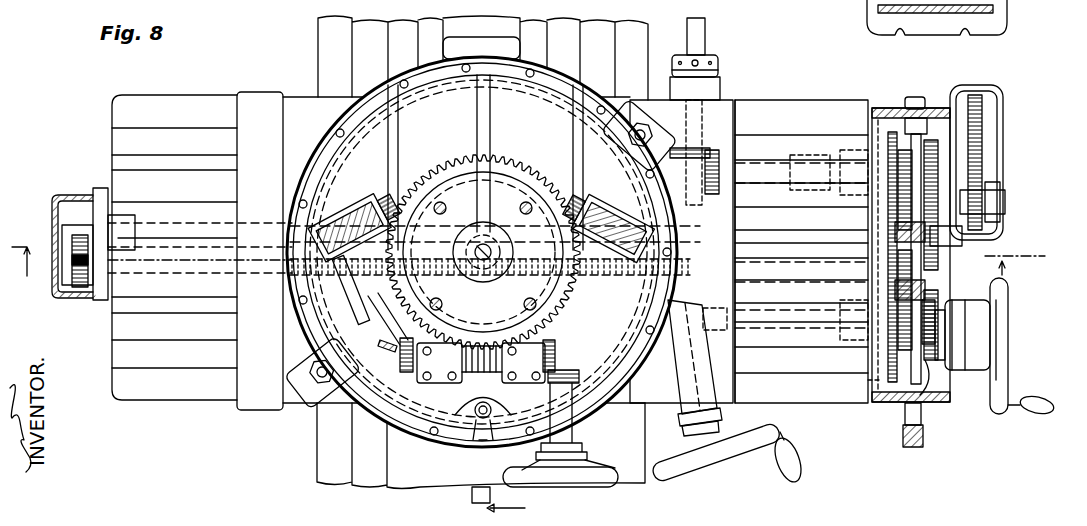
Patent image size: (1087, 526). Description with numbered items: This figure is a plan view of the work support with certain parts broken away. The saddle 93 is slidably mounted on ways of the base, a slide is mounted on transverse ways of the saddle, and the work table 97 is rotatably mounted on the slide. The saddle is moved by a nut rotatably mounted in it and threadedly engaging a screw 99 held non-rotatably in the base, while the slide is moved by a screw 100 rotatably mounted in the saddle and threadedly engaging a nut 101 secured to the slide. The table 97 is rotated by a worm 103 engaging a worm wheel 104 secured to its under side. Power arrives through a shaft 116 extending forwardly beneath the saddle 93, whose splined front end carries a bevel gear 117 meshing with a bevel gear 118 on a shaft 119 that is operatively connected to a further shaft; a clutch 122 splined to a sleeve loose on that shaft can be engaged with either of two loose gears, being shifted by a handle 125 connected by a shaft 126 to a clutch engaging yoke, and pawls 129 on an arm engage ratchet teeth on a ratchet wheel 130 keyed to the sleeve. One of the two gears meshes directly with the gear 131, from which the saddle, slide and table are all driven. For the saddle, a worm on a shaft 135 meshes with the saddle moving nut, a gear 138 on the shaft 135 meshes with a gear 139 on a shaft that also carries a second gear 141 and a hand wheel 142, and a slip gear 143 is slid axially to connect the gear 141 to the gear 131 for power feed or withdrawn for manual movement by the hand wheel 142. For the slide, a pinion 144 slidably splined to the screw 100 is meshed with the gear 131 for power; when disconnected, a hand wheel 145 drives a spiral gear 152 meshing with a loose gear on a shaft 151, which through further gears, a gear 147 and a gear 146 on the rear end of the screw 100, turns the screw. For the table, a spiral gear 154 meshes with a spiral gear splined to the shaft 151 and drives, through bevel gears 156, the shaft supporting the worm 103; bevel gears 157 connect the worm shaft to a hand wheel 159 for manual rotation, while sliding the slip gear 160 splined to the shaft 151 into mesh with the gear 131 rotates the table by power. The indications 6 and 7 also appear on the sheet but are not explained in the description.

The section arrow 6 is at (514, 505).
The section line 7 is at (516, 271).
The saddle 93 is at (192, 388).
The work table 97 is at (538, 103).
The screw 99 is at (472, 493).
The screw 100 is at (262, 280).
The nut 101 is at (428, 297).
The worm 103 is at (481, 369).
The worm wheel 104 is at (574, 300).
The shaft 116 is at (705, 22).
The bevel gear 117 is at (710, 135).
The bevel gear 118 is at (712, 200).
The shaft 119 is at (746, 190).
The clutch 122 is at (925, 140).
The handle 125 is at (925, 437).
The shaft 126 is at (940, 17).
The pawls 129 is at (1003, 200).
The ratchet wheel 130 is at (980, 118).
The gear 131 is at (990, 296).
The shaft 135 is at (725, 330).
The gear 138 is at (848, 340).
The gear 139 is at (870, 380).
The gear 141 is at (930, 385).
The hand wheel 142 is at (1000, 360).
The slip gear 143 is at (942, 322).
The pinion 144 is at (1040, 260).
The hand wheel 145 is at (728, 462).
The gear 146 is at (78, 290).
The gear 147 is at (68, 244).
The shaft 151 is at (188, 232).
The spiral gear 152 is at (618, 215).
The spiral gear 154 is at (345, 215).
The bevel gears 156 is at (400, 360).
The bevel gears 157 is at (594, 338).
The hand wheel 159 is at (503, 472).
The slip gear 160 is at (968, 245).